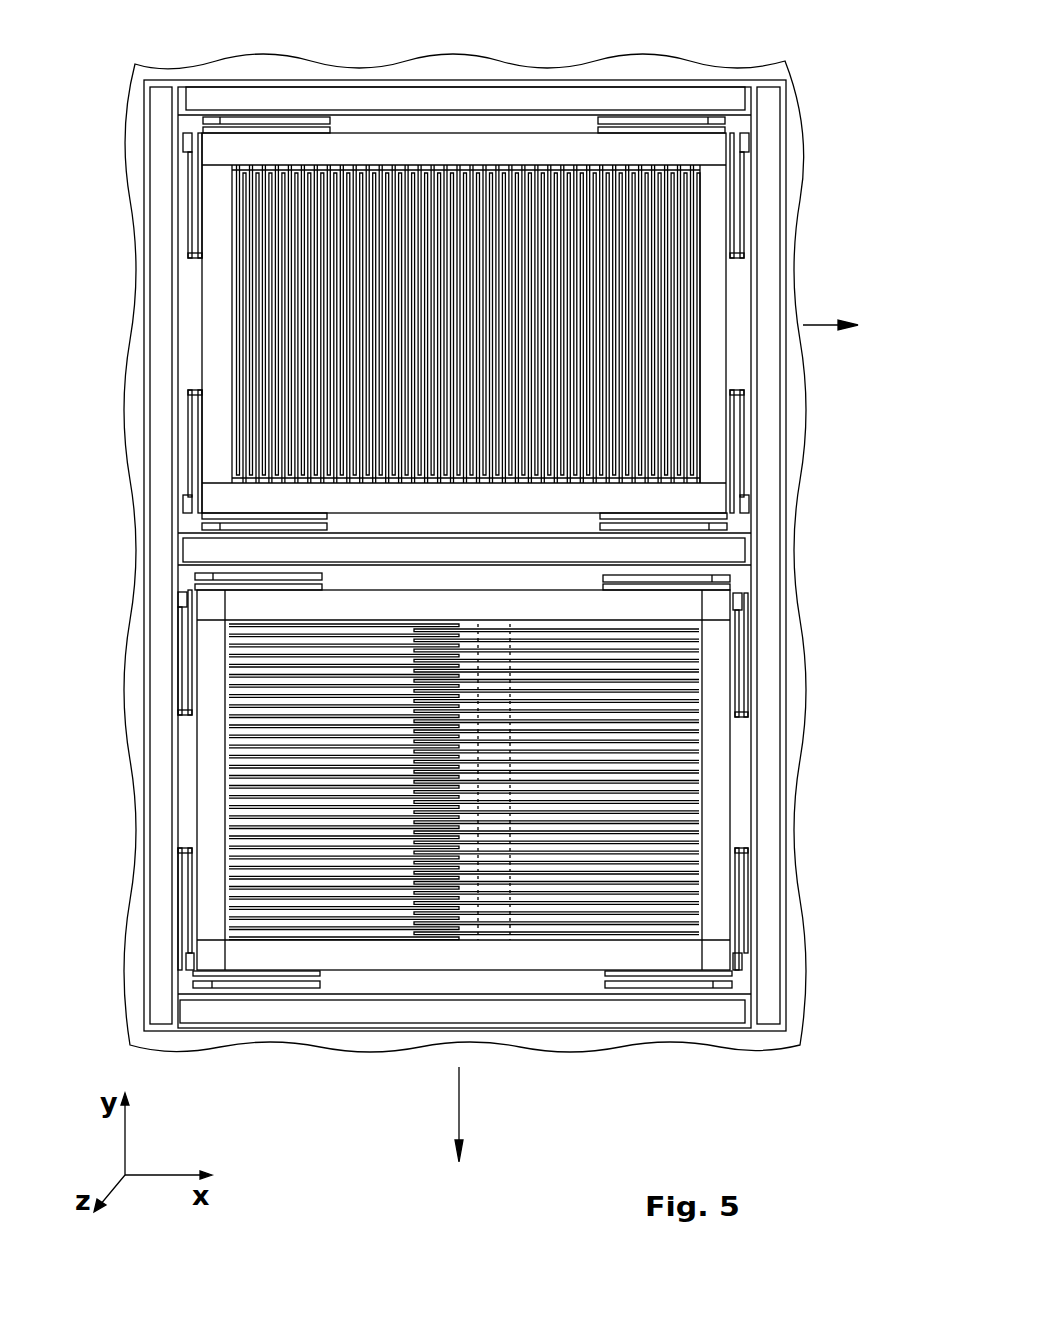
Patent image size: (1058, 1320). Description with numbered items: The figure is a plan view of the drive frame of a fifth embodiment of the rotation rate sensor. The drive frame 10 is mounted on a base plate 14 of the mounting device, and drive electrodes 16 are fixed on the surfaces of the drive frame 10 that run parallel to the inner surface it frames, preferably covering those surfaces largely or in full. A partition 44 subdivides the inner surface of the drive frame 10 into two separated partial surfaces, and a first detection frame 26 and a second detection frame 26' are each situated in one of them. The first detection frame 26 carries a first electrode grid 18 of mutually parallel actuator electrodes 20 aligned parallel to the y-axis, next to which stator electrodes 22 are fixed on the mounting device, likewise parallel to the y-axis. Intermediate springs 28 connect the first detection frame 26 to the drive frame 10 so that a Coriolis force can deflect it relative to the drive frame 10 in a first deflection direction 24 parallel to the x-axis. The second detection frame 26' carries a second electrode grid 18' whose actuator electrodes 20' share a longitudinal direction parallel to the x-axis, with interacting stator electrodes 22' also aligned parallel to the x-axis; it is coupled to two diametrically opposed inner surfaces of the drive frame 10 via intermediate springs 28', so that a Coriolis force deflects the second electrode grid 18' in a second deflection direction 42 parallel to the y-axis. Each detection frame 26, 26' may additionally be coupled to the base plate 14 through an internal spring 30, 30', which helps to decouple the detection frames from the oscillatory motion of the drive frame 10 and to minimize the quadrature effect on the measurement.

The drive frame 10 is at (146, 250).
The base plate 14 is at (136, 372).
The drive electrode 16 is at (160, 205).
The first electrode grid 18 is at (466, 250).
The second electrode grid 18' is at (398, 780).
The actuator electrodes 20 is at (471, 250).
The actuator electrodes 20' is at (635, 782).
The stator electrodes 22 is at (465, 246).
The stator electrodes 22' is at (262, 782).
The first deflection direction 24 is at (822, 325).
The first detection frame 26 is at (526, 323).
The second detection frame 26' is at (526, 780).
The intermediate springs 28 is at (464, 273).
The intermediate springs 28' is at (461, 780).
The internal spring 30 is at (461, 323).
The internal spring 30' is at (461, 761).
The second deflection direction 42 is at (459, 1105).
The partition 44 is at (227, 563).